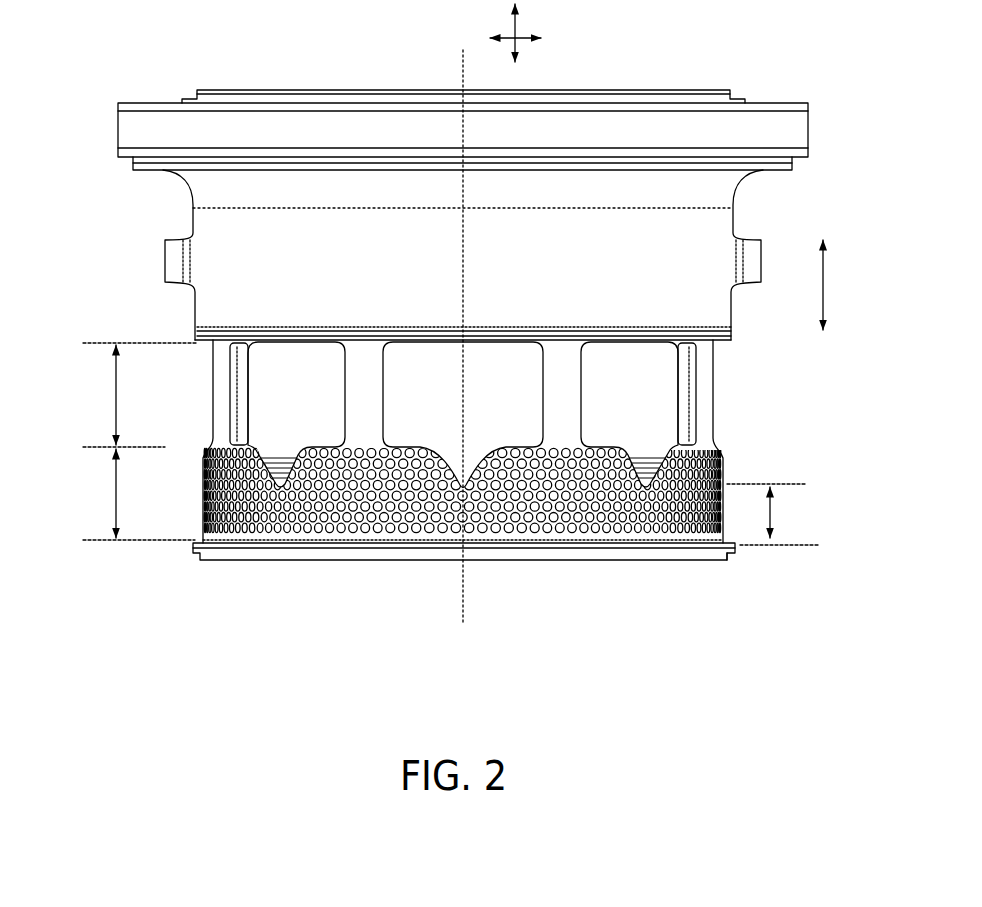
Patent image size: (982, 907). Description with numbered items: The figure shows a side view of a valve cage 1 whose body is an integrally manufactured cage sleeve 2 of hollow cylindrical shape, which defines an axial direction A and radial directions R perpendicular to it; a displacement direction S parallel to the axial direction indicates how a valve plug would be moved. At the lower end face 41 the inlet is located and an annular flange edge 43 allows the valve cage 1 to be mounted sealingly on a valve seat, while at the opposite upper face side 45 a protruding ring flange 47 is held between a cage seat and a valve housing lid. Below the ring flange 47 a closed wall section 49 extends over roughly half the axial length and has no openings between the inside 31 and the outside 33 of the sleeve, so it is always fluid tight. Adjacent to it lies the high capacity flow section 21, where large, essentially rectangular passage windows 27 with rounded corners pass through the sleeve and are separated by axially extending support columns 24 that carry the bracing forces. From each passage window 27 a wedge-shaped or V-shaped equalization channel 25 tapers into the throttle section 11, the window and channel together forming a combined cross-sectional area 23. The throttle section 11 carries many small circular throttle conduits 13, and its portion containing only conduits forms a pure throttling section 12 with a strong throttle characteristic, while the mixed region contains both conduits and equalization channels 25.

The valve cage 1 is at (93, 179).
The cage sleeve 2 is at (210, 220).
The throttle section 11 is at (116, 481).
The pure throttling section 12 is at (772, 523).
The throttle conduit 13 is at (196, 473).
The high capacity flow section 21 is at (116, 394).
The combined complete cross-sectional area 23 is at (288, 401).
The support column 24 is at (550, 418).
The equalization channel 25 is at (288, 458).
The passage window 27 is at (405, 355).
The inside 31 is at (259, 415).
The outside 33 is at (736, 313).
The end face 41 is at (362, 560).
The flange edge 43 is at (733, 562).
The face side 45 is at (313, 90).
The ring flange 47 is at (813, 130).
The closed wall section 49 is at (717, 226).
The axial direction A is at (518, 14).
The radial direction R is at (518, 40).
The displacement direction S is at (825, 287).